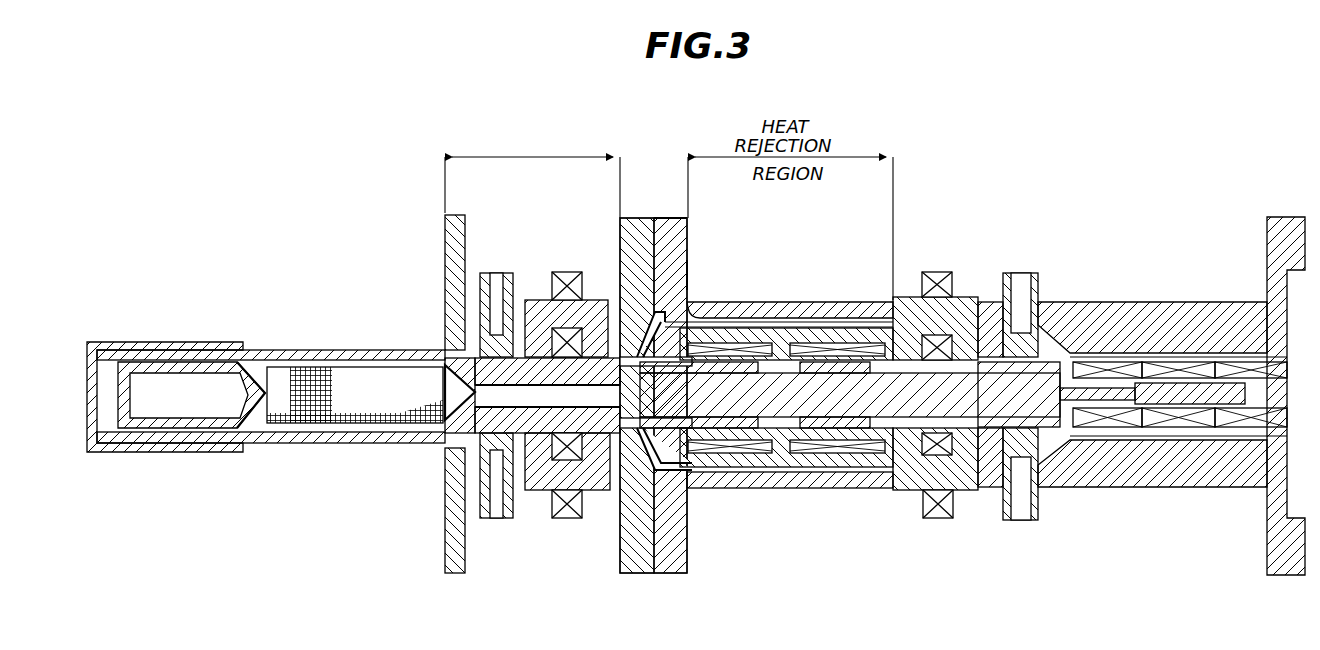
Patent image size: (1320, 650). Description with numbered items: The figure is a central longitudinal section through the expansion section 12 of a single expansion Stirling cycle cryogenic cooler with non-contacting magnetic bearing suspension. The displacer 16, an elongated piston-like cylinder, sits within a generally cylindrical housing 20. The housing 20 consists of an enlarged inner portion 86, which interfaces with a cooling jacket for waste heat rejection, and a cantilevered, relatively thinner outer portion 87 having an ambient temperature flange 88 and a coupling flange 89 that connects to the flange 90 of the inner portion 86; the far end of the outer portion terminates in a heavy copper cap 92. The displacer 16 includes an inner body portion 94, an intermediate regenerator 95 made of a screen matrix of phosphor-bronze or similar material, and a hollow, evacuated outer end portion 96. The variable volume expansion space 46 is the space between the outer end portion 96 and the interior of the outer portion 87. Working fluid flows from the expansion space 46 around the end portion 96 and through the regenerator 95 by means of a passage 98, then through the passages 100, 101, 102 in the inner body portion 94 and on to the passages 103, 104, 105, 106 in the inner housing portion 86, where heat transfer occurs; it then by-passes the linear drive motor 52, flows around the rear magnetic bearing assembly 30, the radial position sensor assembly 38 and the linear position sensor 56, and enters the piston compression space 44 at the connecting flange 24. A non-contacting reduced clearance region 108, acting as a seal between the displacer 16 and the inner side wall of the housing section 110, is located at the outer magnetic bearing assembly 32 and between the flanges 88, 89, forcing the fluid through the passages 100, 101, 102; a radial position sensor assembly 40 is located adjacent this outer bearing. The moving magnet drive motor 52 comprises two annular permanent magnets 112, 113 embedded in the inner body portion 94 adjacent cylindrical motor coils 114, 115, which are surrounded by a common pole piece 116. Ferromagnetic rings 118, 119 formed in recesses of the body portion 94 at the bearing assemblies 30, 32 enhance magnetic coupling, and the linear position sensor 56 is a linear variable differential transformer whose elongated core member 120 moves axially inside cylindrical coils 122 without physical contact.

The expansion section 12 is at (767, 619).
The displacer 16 is at (900, 390).
The displacer housing 20 is at (846, 245).
The connecting flange 24 is at (1266, 608).
The rear magnetic bearing assembly 30 is at (930, 518).
The outer magnetic bearing assembly 32 is at (558, 518).
The radial position sensor assembly 38 is at (1020, 520).
The radial position sensor assembly 40 is at (495, 518).
The variable volume compression space 44 is at (1293, 303).
The variable volume expansion space 46 is at (104, 360).
The linear drive motor 52 is at (790, 340).
The linear position sensor 56 is at (1218, 438).
The enlarged inner portion 86 is at (758, 302).
The outer portion 87 is at (342, 352).
The ambient temperature flange 88 is at (446, 262).
The coupling flange 89 is at (621, 240).
The flange 90 is at (688, 218).
The heavy copper cap 92 is at (157, 344).
The inner body portion 94 is at (1047, 372).
The intermediate regenerator 95 is at (360, 378).
The hollow outer end portion 96 is at (200, 362).
The passage 98 is at (250, 372).
The passage 100 is at (457, 350).
The passage 101 is at (447, 413).
The passage 102 is at (637, 412).
The passage 103 is at (688, 272).
The passage 104 is at (848, 320).
The passage 105 is at (1120, 343).
The passage 106 is at (1163, 357).
The reduced clearance region 108 is at (532, 167).
The housing section 110 is at (473, 340).
The annular permanent magnet 112 is at (742, 453).
The annular permanent magnet 113 is at (827, 453).
The cylindrical motor coil 114 is at (703, 472).
The cylindrical motor coil 115 is at (843, 450).
The common pole piece 116 is at (780, 460).
The ferromagnetic ring 118 is at (950, 325).
The ferromagnetic ring 119 is at (550, 365).
The elongated core member 120 is at (1133, 427).
The cylindrical coils 122 is at (1090, 427).